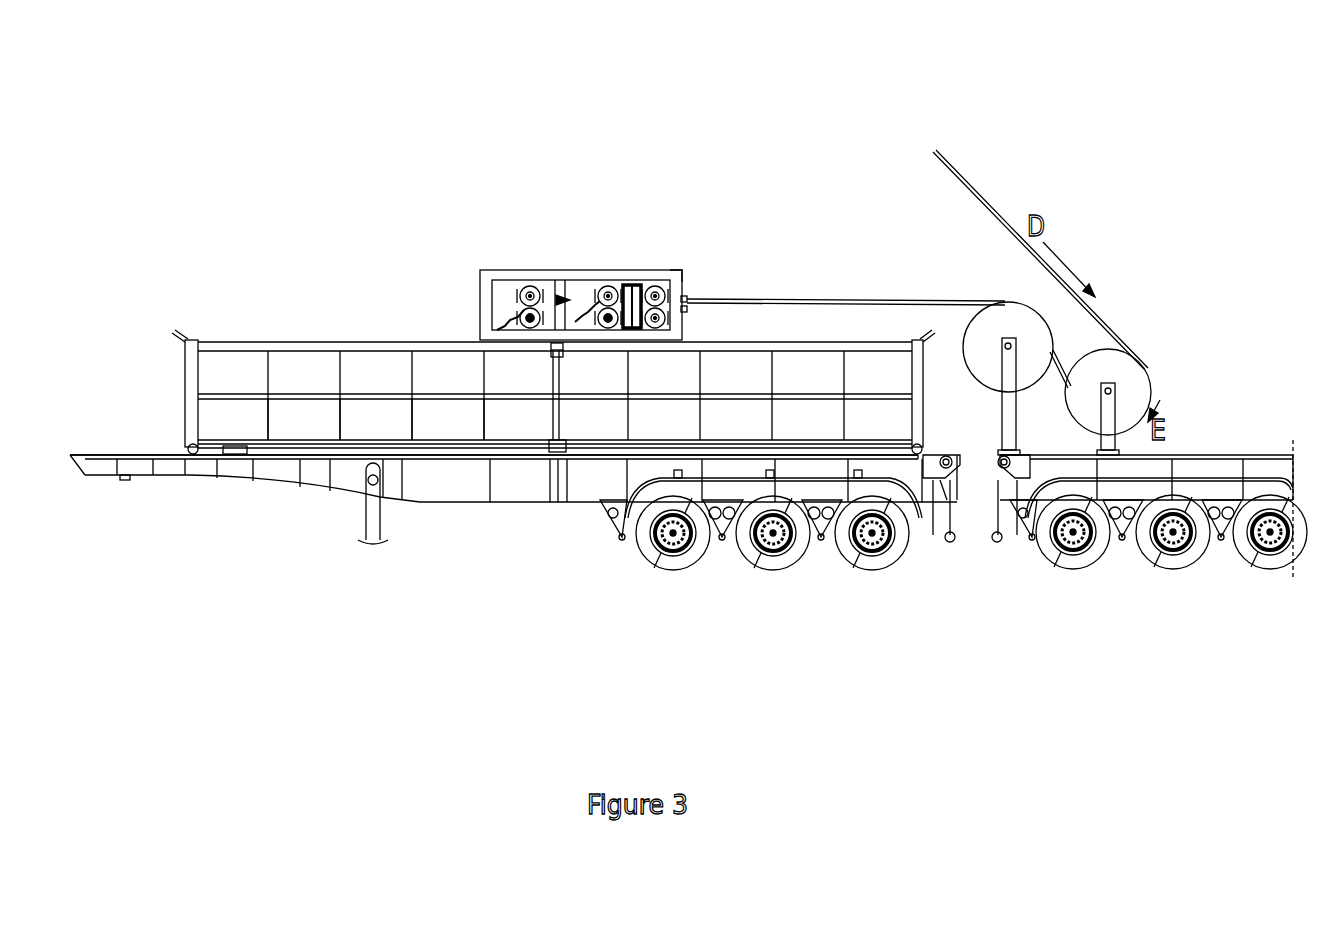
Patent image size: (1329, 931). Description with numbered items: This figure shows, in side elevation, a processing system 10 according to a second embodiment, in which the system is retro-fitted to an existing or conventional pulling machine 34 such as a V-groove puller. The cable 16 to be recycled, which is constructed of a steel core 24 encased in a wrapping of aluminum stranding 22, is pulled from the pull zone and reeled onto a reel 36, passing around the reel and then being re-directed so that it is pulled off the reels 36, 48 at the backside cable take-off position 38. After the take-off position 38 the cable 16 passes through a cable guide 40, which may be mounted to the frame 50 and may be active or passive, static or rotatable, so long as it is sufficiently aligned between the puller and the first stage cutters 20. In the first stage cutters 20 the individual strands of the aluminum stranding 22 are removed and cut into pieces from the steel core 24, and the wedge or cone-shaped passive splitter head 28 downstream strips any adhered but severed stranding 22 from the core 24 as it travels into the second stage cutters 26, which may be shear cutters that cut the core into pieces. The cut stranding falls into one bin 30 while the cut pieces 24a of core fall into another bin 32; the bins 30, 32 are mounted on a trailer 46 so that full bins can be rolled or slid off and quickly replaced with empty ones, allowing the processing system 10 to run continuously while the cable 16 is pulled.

The processing system 10 is at (565, 195).
The cable 16 is at (800, 302).
The first stage cutters 20 is at (652, 280).
The aluminum stranding 22 is at (600, 420).
The steel core 24 is at (550, 410).
The cut pieces of core 24a is at (522, 316).
The second stage cutters 26 is at (520, 290).
The passive splitter head 28 is at (590, 292).
The bin 30 is at (612, 335).
The bin 32 is at (510, 415).
The pulling machine 34 is at (1192, 340).
The reel 36 is at (1092, 405).
The backside cable take-off position 38 is at (995, 298).
The cable guide 40 is at (684, 298).
The trailer 46 is at (487, 512).
The reel 48 is at (985, 375).
The frame 50 is at (682, 270).